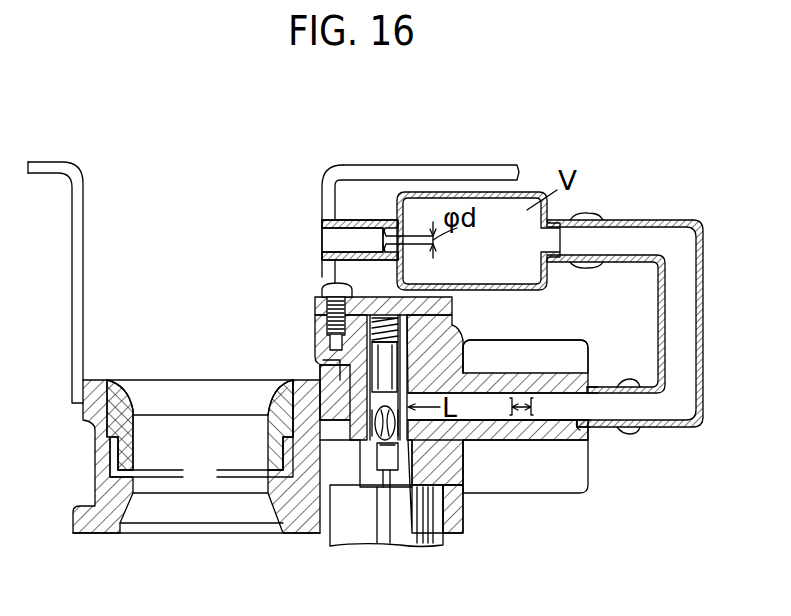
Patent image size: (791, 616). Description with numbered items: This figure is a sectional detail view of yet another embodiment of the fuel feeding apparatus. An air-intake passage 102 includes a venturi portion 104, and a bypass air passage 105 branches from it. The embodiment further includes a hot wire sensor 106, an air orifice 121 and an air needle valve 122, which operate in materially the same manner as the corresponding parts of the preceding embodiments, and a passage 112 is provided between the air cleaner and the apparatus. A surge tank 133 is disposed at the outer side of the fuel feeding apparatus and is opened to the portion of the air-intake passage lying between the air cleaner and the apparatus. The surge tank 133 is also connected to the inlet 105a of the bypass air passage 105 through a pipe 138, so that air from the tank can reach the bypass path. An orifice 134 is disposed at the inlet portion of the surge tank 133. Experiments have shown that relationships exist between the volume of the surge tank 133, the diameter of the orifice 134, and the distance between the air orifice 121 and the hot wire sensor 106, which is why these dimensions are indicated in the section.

The air-intake passage 102 is at (168, 416).
The venturi portion 104 is at (268, 434).
The bypass air passage 105 is at (307, 473).
The inlet of the bypass air passage 105a is at (607, 430).
The hot wire sensor 106 is at (542, 390).
The passage 112 is at (372, 170).
The air orifice 121 is at (400, 427).
The air needle valve 122 is at (372, 420).
The surge tank 133 is at (503, 192).
The orifice 134 is at (388, 213).
The pipe 138 is at (663, 220).